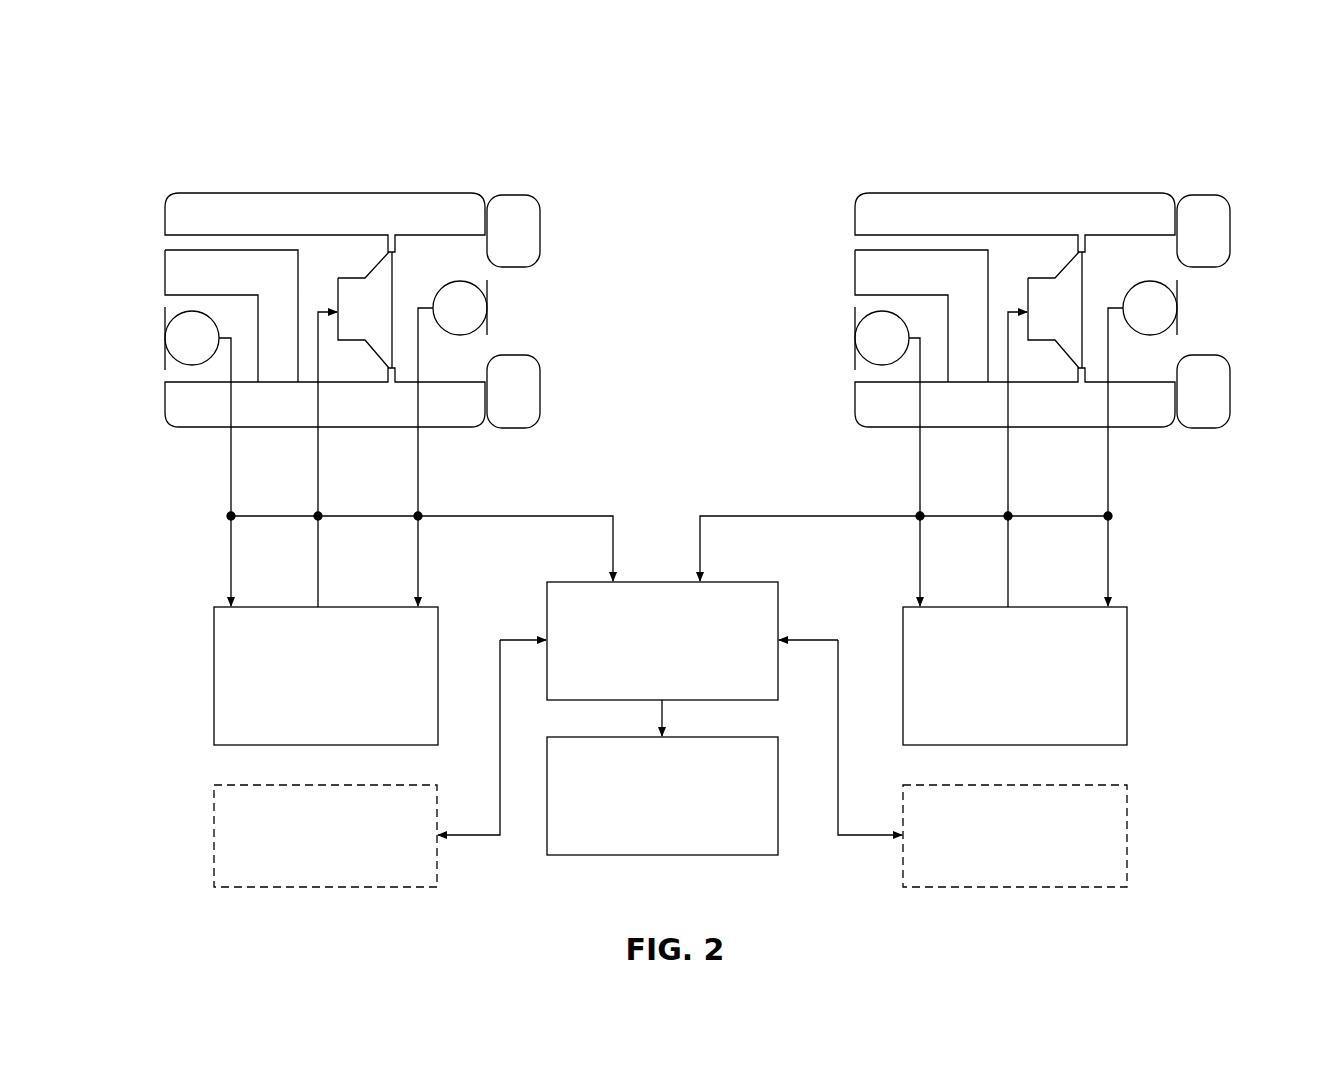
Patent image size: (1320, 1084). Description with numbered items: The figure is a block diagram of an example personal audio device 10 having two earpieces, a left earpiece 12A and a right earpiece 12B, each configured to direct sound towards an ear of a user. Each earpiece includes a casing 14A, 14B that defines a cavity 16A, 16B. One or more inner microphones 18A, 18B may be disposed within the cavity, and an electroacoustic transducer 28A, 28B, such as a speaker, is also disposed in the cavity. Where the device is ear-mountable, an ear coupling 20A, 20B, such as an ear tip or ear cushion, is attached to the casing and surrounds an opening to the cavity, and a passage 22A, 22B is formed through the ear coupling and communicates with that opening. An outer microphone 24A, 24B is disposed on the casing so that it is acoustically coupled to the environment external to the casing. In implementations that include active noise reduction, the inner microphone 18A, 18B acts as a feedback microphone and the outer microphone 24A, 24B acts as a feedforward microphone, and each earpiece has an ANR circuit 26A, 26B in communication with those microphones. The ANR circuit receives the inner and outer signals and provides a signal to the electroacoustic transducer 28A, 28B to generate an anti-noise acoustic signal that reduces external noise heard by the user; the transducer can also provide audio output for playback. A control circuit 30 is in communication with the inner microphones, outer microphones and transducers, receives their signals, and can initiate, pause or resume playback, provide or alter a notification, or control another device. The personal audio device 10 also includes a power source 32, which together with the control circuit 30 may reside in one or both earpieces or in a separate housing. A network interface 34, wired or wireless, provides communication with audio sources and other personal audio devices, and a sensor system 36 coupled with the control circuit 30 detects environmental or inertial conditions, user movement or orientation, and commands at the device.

The personal audio device 10 is at (719, 136).
The left earpiece 12A is at (211, 139).
The right earpiece 12B is at (900, 139).
The casing 14A is at (325, 310).
The casing 14B is at (1015, 310).
The cavity 16A is at (470, 360).
The cavity 16B is at (1160, 360).
The inner microphone 18A is at (460, 307).
The inner microphone 18B is at (1150, 307).
The ear coupling 20A is at (513, 311).
The ear coupling 20B is at (1203, 311).
The passage 22A is at (522, 297).
The passage 22B is at (1212, 297).
The outer microphone 24A is at (192, 338).
The outer microphone 24B is at (882, 338).
The ANR circuit 26A is at (326, 676).
The ANR circuit 26B is at (1015, 676).
The electroacoustic transducer 28A is at (365, 310).
The electroacoustic transducer 28B is at (1055, 310).
The control circuit 30 is at (662, 641).
The power source 32 is at (662, 796).
The network interface 34 is at (325, 836).
The sensor system 36 is at (1015, 836).